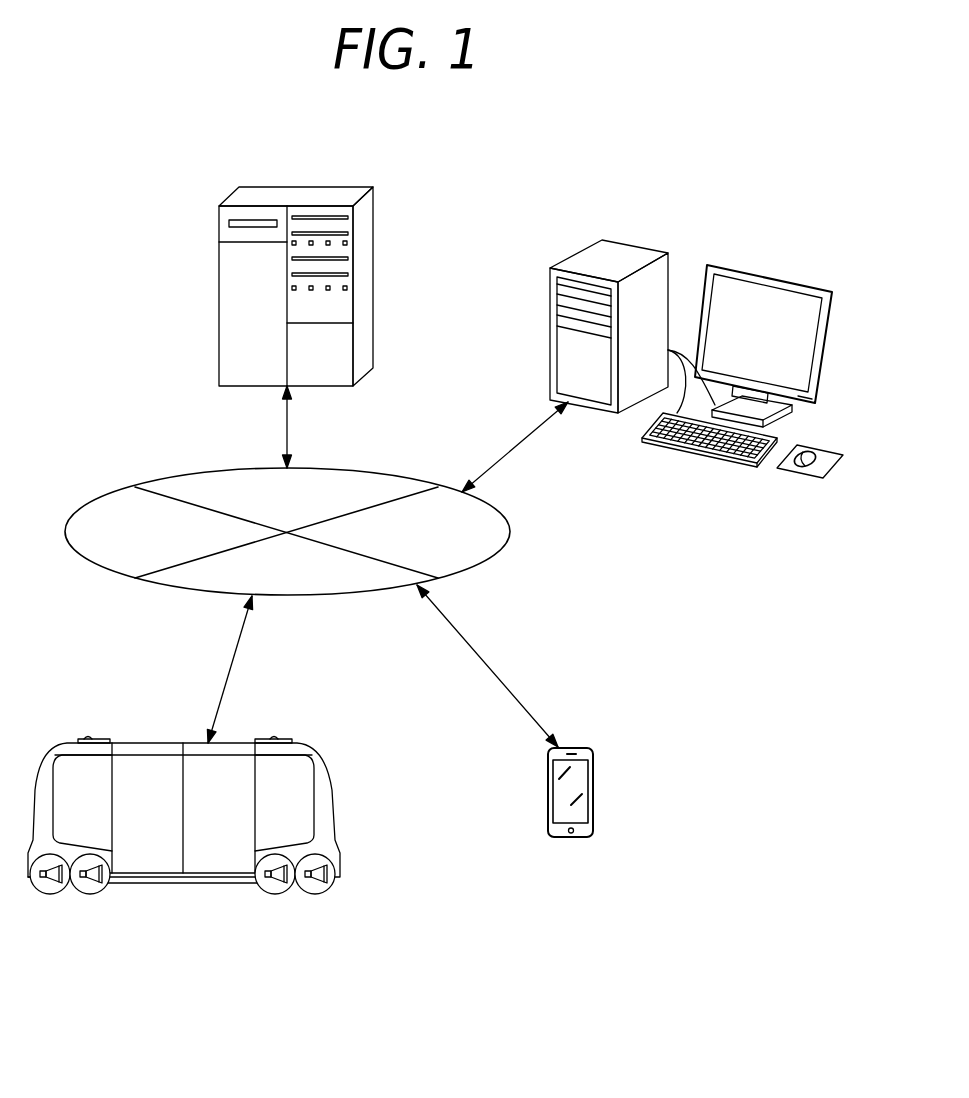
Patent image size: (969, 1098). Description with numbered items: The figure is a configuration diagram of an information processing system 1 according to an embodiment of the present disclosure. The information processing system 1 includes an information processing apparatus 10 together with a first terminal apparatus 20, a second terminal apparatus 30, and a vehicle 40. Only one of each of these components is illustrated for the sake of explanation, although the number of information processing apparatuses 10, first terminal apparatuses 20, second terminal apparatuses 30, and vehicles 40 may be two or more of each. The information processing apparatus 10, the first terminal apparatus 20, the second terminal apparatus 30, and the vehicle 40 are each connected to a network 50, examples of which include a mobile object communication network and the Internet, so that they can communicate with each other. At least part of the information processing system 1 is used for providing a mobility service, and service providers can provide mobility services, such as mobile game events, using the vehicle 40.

The information processing system 1 is at (662, 596).
The information processing apparatus 10 is at (219, 272).
The first terminal apparatus 20 is at (594, 795).
The second terminal apparatus 30 is at (585, 248).
The vehicle 40 is at (207, 886).
The network 50 is at (100, 497).